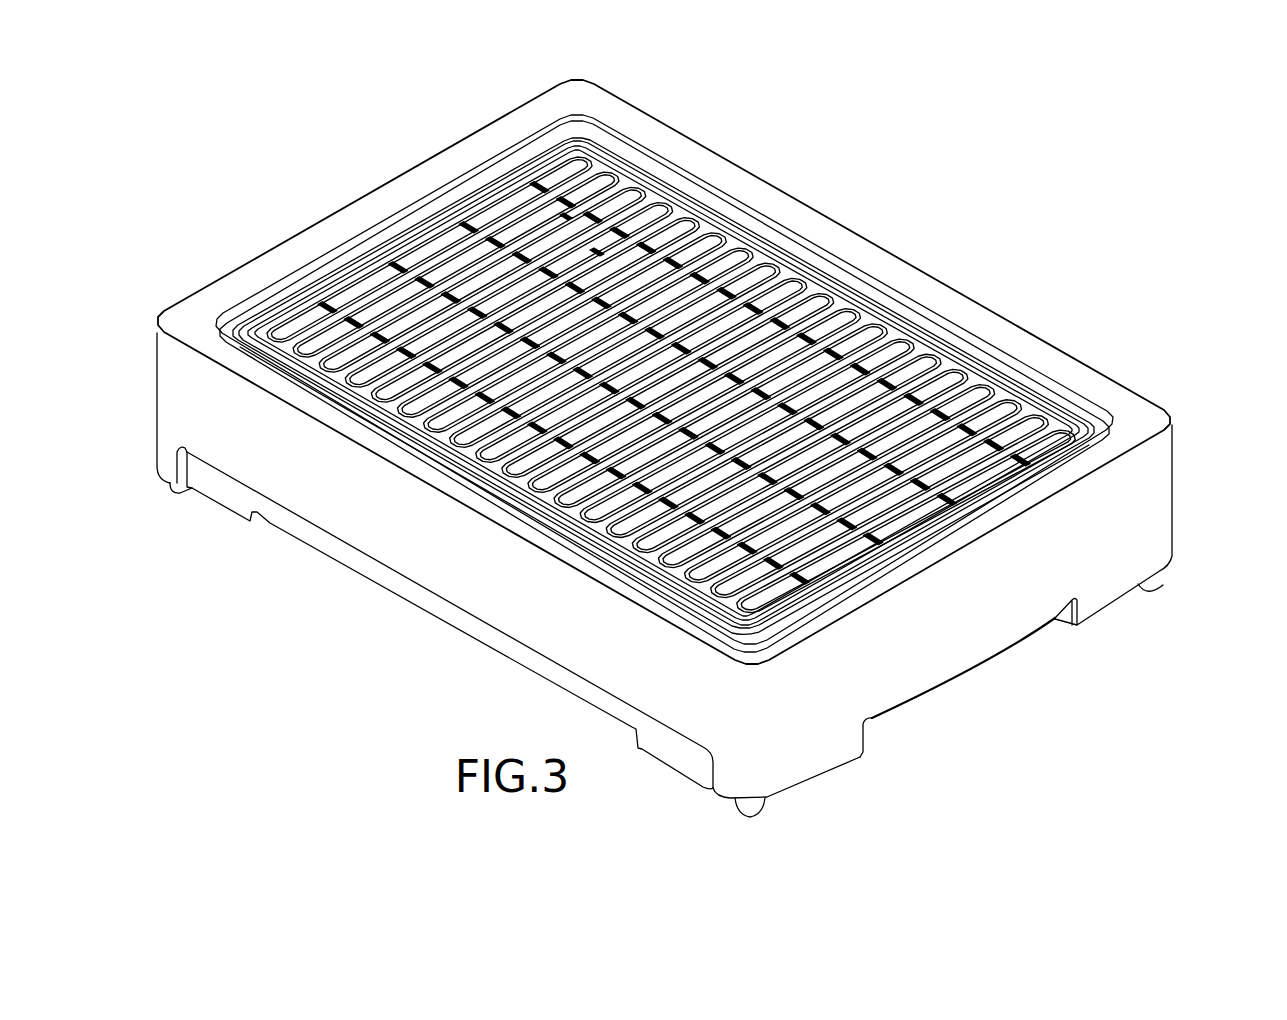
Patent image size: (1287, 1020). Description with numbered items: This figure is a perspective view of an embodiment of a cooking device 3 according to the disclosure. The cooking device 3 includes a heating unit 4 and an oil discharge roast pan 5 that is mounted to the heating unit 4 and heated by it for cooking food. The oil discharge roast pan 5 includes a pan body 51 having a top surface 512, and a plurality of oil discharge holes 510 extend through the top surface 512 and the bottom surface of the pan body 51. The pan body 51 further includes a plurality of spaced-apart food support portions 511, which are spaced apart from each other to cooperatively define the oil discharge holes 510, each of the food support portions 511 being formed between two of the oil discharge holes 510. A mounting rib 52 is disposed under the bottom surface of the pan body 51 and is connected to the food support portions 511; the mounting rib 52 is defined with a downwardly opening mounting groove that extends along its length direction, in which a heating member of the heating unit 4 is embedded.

The cooking device 3 is at (827, 207).
The heating unit 4 is at (1005, 330).
The oil discharge roast pan 5 is at (455, 195).
The pan body 51 is at (385, 243).
The oil discharge holes 510 is at (355, 353).
The food support portions 511 is at (570, 245).
The top surface 512 is at (918, 345).
The mounting rib 52 is at (616, 535).